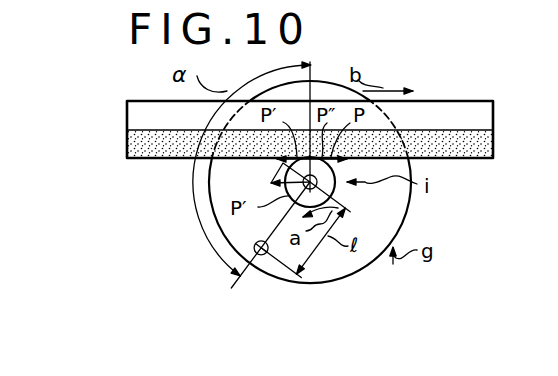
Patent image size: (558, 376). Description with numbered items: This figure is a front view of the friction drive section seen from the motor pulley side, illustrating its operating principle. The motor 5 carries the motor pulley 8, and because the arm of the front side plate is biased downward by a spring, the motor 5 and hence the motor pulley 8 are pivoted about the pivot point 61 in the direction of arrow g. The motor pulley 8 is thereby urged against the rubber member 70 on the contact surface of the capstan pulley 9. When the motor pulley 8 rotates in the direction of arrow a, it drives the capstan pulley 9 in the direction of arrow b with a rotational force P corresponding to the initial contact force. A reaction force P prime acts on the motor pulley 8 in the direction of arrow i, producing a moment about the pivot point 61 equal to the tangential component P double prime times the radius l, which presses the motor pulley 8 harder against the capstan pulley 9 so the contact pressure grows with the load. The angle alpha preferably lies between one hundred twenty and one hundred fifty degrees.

The capstan pulley 9 is at (482, 103).
The rubber member 70 is at (487, 145).
The motor 5 is at (405, 212).
The motor pulley 8 is at (331, 187).
The pivot point 61 is at (254, 248).